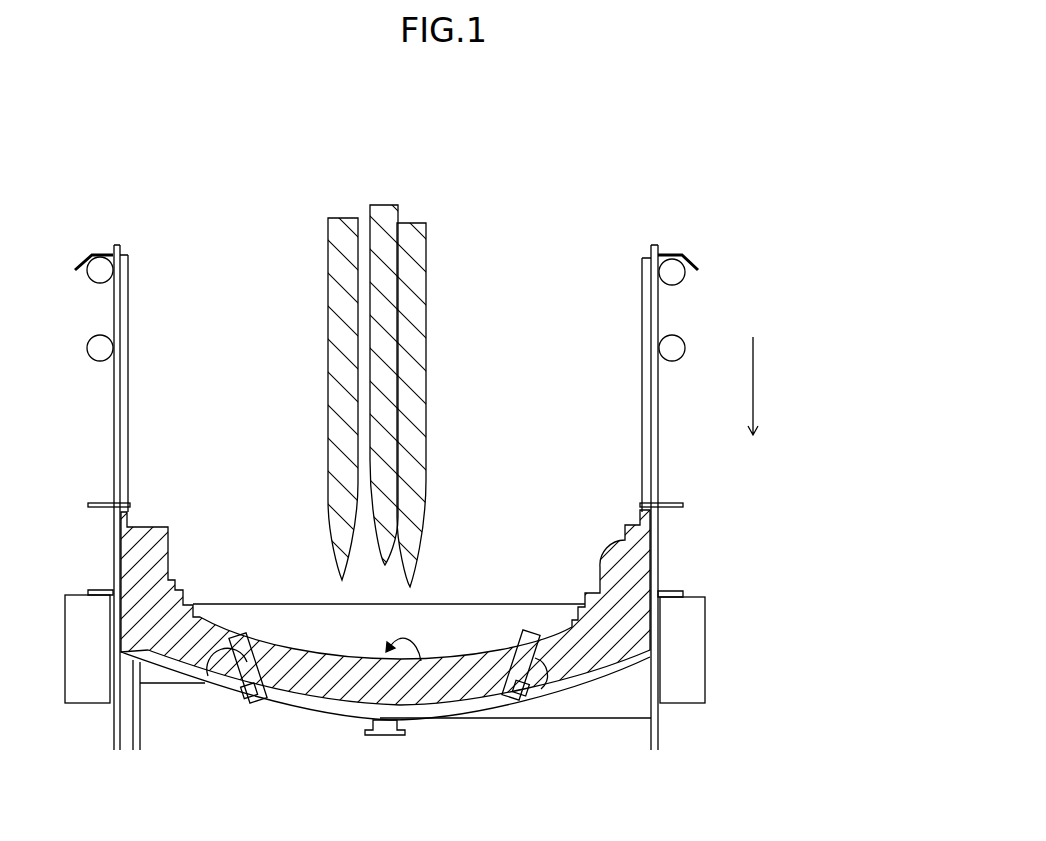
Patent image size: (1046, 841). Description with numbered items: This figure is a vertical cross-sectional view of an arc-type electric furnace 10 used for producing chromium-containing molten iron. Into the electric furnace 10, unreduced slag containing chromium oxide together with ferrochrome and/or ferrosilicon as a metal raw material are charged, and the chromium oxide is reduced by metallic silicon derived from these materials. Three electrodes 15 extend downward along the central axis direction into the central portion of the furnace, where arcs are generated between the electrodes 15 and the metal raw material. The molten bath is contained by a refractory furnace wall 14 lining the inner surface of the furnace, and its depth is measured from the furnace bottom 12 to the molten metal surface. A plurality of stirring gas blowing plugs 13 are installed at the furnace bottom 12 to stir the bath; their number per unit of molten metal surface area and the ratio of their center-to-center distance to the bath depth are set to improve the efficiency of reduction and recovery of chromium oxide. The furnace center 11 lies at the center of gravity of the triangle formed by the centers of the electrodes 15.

The electric furnace 10 is at (535, 151).
The furnace center 11 is at (416, 706).
The furnace bottom 12 is at (313, 693).
The stirring gas blowing plug 13 is at (233, 660).
The refractory furnace wall 14 is at (125, 340).
The electrode 15 is at (413, 280).